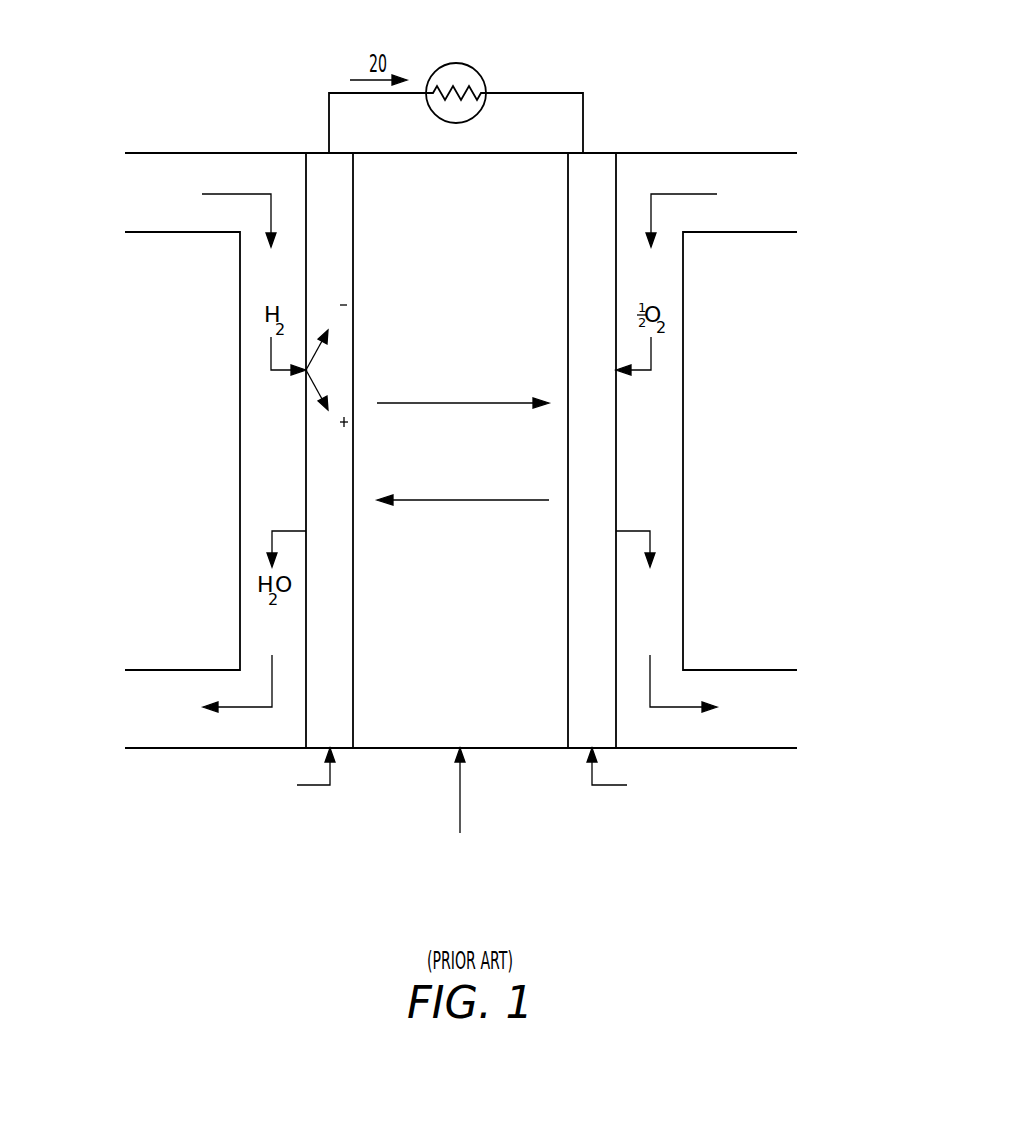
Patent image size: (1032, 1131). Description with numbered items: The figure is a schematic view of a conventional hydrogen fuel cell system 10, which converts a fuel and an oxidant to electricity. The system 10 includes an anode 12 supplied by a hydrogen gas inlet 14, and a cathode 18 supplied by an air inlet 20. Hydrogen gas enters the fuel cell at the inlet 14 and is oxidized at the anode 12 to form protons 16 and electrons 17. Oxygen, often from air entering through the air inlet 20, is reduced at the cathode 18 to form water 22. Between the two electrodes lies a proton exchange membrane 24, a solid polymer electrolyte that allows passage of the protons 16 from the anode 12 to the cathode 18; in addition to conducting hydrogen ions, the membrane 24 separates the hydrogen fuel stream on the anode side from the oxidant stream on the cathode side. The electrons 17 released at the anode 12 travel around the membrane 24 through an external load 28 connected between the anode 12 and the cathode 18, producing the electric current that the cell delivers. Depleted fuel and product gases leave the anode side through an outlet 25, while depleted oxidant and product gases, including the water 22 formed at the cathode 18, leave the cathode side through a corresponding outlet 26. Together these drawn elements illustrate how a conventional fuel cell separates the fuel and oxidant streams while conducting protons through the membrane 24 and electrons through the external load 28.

The hydrogen fuel cell system 10 is at (148, 47).
The anode 12 is at (271, 800).
The hydrogen gas inlet 14 is at (138, 194).
The protons 16 is at (348, 433).
The electrons 17 is at (347, 313).
The cathode 18 is at (661, 800).
The air inlet 20 is at (808, 194).
The water 22 is at (667, 581).
The proton exchange membrane 24 is at (461, 801).
The depleted fuel and product gases outlet 25 is at (92, 683).
The fuel outlet 26 is at (843, 677).
The load 28 is at (482, 72).